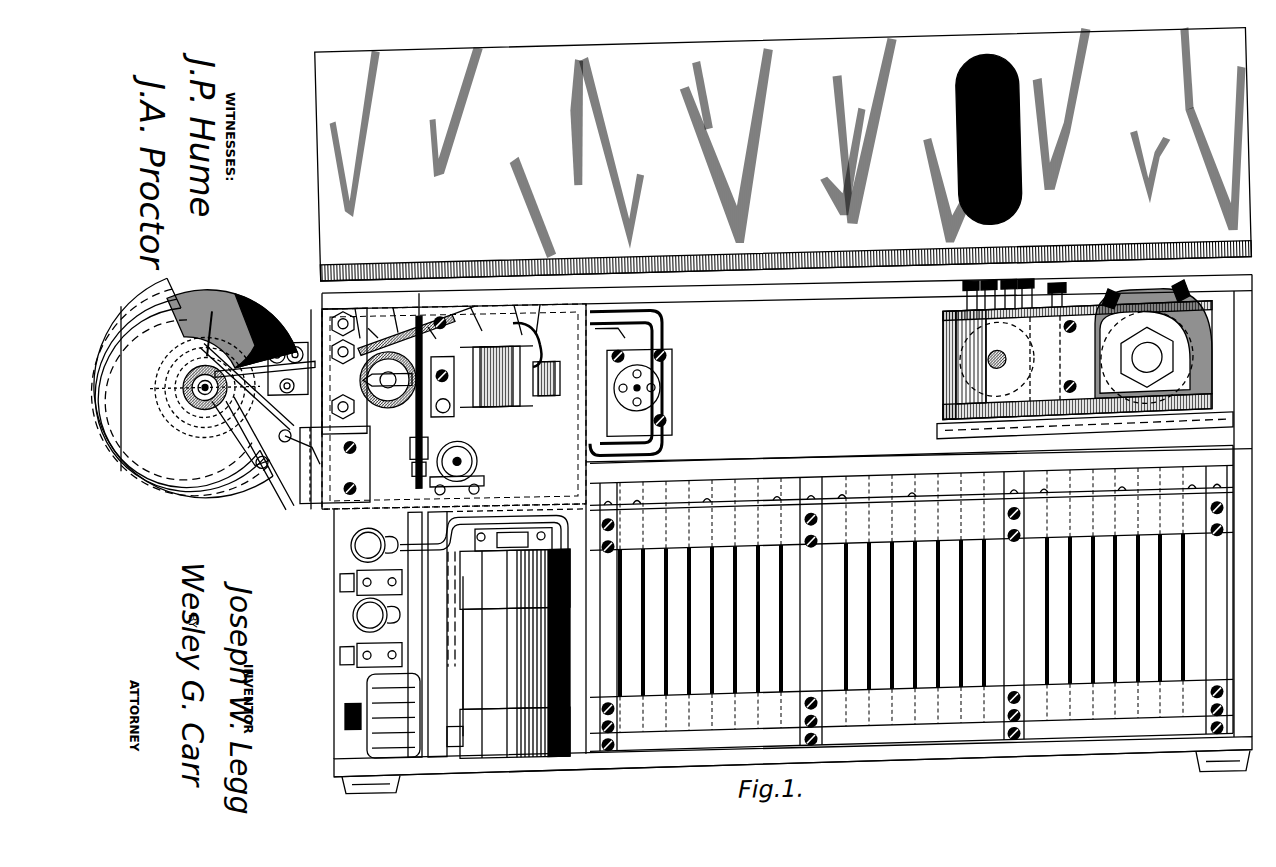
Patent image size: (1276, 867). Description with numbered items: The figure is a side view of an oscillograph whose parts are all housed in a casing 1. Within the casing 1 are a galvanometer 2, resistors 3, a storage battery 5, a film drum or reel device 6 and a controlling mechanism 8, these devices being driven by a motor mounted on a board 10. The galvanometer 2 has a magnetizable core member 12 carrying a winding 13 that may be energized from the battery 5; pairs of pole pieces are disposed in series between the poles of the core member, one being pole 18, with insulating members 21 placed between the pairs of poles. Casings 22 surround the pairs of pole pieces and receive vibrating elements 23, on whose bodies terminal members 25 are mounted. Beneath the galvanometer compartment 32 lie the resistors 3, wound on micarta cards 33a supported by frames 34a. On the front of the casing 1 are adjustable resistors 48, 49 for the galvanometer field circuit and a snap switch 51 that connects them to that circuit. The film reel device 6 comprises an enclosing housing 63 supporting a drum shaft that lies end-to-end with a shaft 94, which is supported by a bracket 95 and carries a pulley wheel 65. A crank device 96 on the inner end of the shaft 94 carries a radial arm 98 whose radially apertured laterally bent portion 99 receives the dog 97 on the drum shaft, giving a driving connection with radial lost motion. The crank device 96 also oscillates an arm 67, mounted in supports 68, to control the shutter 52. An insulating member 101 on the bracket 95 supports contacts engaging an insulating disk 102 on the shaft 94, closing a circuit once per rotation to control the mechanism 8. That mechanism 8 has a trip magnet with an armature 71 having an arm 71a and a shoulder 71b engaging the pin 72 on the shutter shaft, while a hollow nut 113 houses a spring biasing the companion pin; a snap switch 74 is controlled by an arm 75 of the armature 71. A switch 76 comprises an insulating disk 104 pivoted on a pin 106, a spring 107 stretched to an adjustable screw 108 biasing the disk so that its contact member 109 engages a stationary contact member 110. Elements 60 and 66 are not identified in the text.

The casing 1 is at (330, 330).
The galvanometer 2 is at (943, 355).
The resistor 3 is at (984, 602).
The storage battery 5 is at (566, 762).
The film drum or reel device 6 is at (228, 320).
The controlling mechanism 8 is at (540, 300).
The board 10 is at (548, 391).
The magnetizable core member 12 is at (1140, 369).
The winding 13 is at (1186, 314).
The pole 18 is at (960, 393).
The insulating members 21 is at (943, 318).
The casings 22 is at (946, 341).
The vibrating elements 23 is at (965, 298).
The terminal members 25 is at (1000, 297).
The galvanometer compartment 32 is at (830, 325).
The micarta cards 33a is at (734, 552).
The frames 34a is at (968, 708).
The adjustable resistor 48 is at (356, 538).
The adjustable resistor 49 is at (356, 608).
The snap switch 51 is at (367, 730).
The shutter 52 is at (388, 395).
The bracket 60 is at (280, 363).
The enclosing housing 63 is at (206, 300).
The pulley wheel 65 is at (218, 482).
The link 66 is at (265, 345).
The arm 67 is at (430, 425).
The supports 68 is at (296, 447).
The armature 71 is at (514, 300).
The arm 71a is at (393, 300).
The shoulder 71b is at (355, 300).
The pin 72 is at (392, 391).
The snap switch 74 is at (368, 320).
The arm 75 is at (428, 320).
The switch 76 is at (470, 463).
The shaft 94 is at (203, 388).
The bracket 95 is at (272, 486).
The eccentric or crank device 96 is at (262, 330).
The radial arm or dog 97 is at (201, 388).
The radial arm 98 is at (193, 396).
The radially apertured laterally bent portion 99 is at (126, 305).
The insulating member 101 is at (328, 465).
The insulating disk or drum 102 is at (213, 300).
The insulating disk 104 is at (490, 341).
The pivot pin or shaft 106 is at (446, 494).
The spring 107 is at (401, 458).
The adjustable screw 108 is at (400, 482).
The contact member 109 is at (592, 383).
The stationary contact member 110 is at (470, 300).
The hollow nut or adjusting member 113 is at (332, 318).